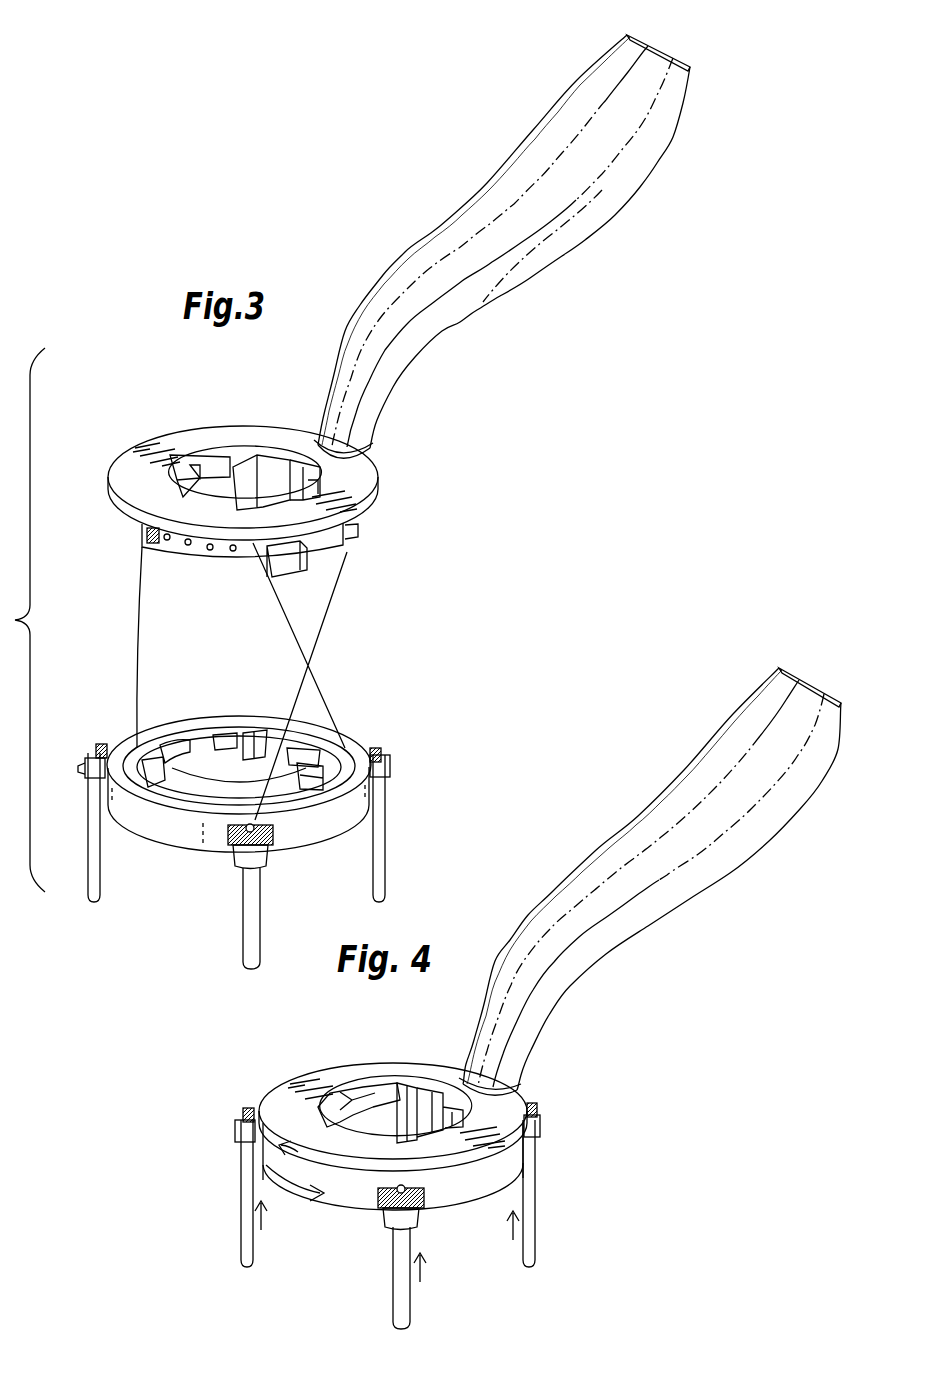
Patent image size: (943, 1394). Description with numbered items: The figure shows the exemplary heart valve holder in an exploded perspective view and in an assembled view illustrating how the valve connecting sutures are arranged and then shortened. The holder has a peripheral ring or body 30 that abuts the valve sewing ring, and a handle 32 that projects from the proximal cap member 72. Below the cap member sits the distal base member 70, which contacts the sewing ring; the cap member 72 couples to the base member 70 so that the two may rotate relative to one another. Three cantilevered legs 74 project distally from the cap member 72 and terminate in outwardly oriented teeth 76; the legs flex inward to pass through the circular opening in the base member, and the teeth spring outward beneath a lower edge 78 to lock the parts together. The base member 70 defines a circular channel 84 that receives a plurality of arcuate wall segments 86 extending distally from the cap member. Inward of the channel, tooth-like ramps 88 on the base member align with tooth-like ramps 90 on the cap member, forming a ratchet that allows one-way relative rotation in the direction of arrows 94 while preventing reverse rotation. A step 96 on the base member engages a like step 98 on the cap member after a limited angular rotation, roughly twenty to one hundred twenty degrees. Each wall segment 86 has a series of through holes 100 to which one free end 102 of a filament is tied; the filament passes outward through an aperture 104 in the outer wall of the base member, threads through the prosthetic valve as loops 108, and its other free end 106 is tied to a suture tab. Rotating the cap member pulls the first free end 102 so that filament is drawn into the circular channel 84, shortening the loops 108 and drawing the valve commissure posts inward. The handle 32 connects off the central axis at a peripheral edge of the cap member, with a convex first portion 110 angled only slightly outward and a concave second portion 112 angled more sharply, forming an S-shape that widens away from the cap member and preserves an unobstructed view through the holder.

In FIG. 4, the peripheral ring or body 30 is at (418, 1170).
In FIG. 3, the handle 32 is at (545, 246).
In FIG. 4, the handle 32 is at (706, 896).
In FIG. 3, the distal base member 70 is at (241, 786).
In FIG. 3, the proximal cap member 72 is at (260, 508).
In FIG. 3, the cantilevered legs 74 is at (273, 465).
In FIG. 3, the teeth 76 is at (300, 566).
In FIG. 3, the lower edge 78 is at (182, 788).
In FIG. 3, the circular channel 84 is at (386, 762).
In FIG. 3, the arcuate wall segments 86 is at (180, 556).
In FIG. 3, the tooth-like ramps 88 is at (247, 755).
In FIG. 4, the tooth-like ramps 88 is at (395, 1095).
In FIG. 4, the tooth-like ramps 90 is at (355, 1100).
In FIG. 4, the arrows 94 is at (308, 1170).
In FIG. 3, the step 96 is at (340, 750).
In FIG. 3, the step 98 is at (208, 462).
In FIG. 3, the through holes 100 is at (212, 552).
In FIG. 3, the first free end 102 is at (145, 535).
In FIG. 3, the aperture 104 is at (140, 740).
In FIG. 3, the other free end 106 is at (96, 753).
In FIG. 3, the loops 108 is at (243, 933).
In FIG. 3, the first portion 110 is at (415, 357).
In FIG. 3, the second portion 112 is at (673, 133).